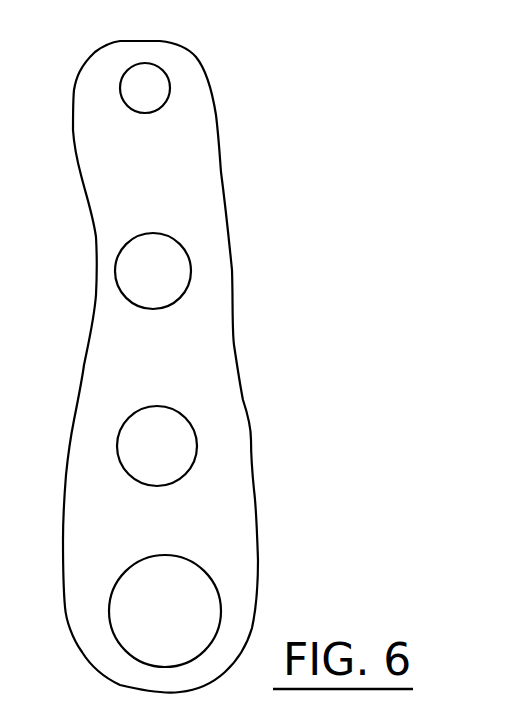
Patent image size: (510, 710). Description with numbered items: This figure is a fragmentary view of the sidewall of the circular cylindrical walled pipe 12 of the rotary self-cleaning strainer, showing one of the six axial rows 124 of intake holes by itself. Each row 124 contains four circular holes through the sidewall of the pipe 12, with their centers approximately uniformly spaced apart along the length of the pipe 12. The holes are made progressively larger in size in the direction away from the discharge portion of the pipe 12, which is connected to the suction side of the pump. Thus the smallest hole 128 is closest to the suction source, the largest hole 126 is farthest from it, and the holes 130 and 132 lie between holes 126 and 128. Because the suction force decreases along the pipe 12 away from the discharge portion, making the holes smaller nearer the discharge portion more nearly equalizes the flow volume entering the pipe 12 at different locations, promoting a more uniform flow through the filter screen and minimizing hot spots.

The pipe 12 is at (240, 512).
The axial row 124 is at (147, 24).
The largest hole 126 is at (212, 603).
The smallest hole 128 is at (163, 91).
The hole 130 is at (185, 278).
The hole 132 is at (188, 445).